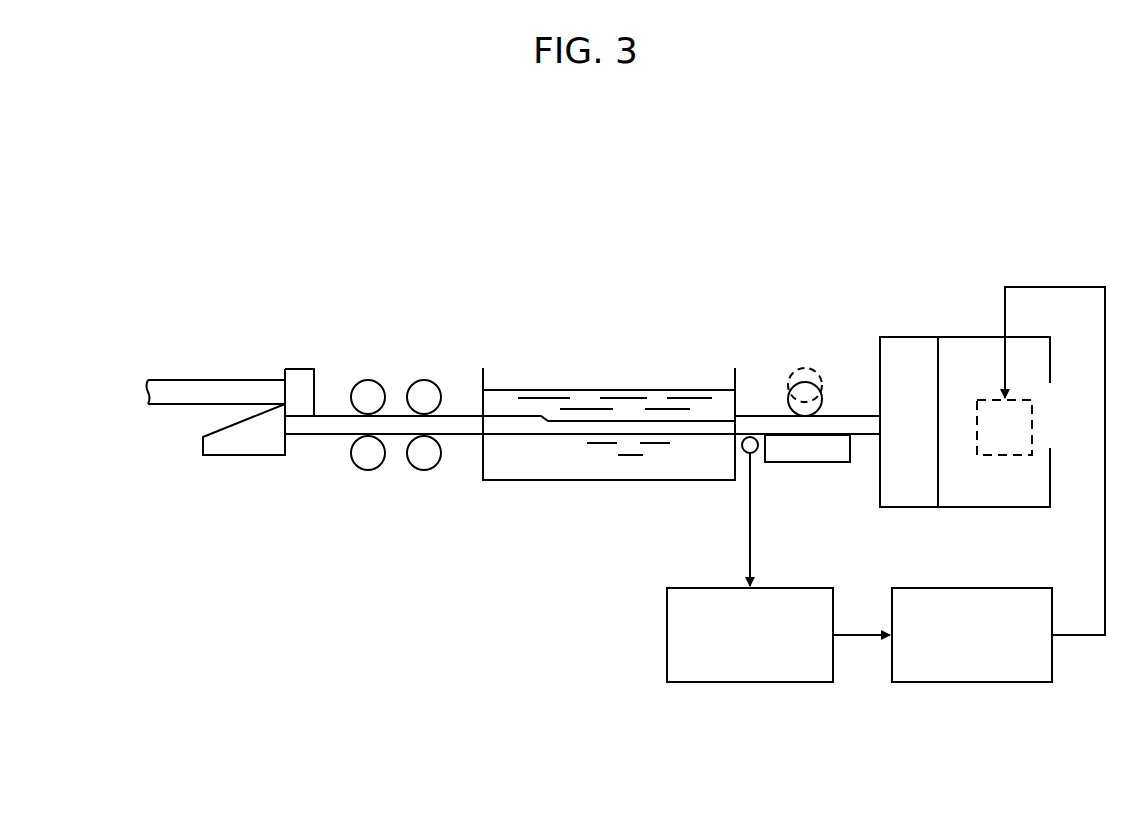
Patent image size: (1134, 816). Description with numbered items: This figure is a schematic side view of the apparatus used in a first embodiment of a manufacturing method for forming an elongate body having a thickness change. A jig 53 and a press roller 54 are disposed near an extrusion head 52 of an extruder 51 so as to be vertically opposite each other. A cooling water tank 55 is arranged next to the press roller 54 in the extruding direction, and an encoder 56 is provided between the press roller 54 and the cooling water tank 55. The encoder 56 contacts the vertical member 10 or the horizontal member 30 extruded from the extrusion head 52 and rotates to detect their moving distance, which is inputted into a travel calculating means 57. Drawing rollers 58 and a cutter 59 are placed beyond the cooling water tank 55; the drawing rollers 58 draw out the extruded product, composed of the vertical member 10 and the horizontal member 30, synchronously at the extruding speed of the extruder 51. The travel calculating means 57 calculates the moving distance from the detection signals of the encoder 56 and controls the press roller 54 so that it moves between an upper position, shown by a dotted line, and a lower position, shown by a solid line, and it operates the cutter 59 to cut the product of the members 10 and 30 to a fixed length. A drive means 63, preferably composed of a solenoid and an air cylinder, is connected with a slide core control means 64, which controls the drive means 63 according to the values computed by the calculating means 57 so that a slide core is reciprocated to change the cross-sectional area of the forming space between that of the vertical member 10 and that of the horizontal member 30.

The vertical member 10 is at (202, 387).
The horizontal member 30 is at (640, 420).
The extruder 51 is at (983, 340).
The extrusion head 52 is at (907, 340).
The jig 53 is at (812, 458).
The press roller 54 is at (788, 397).
The cooling water tank 55 is at (585, 481).
The encoder 56 is at (754, 436).
The travel calculating means 57 is at (718, 682).
The drawing rollers 58 is at (362, 381).
The cutter 59 is at (252, 452).
The drive means 63 is at (1007, 457).
The slide core control means 64 is at (912, 682).